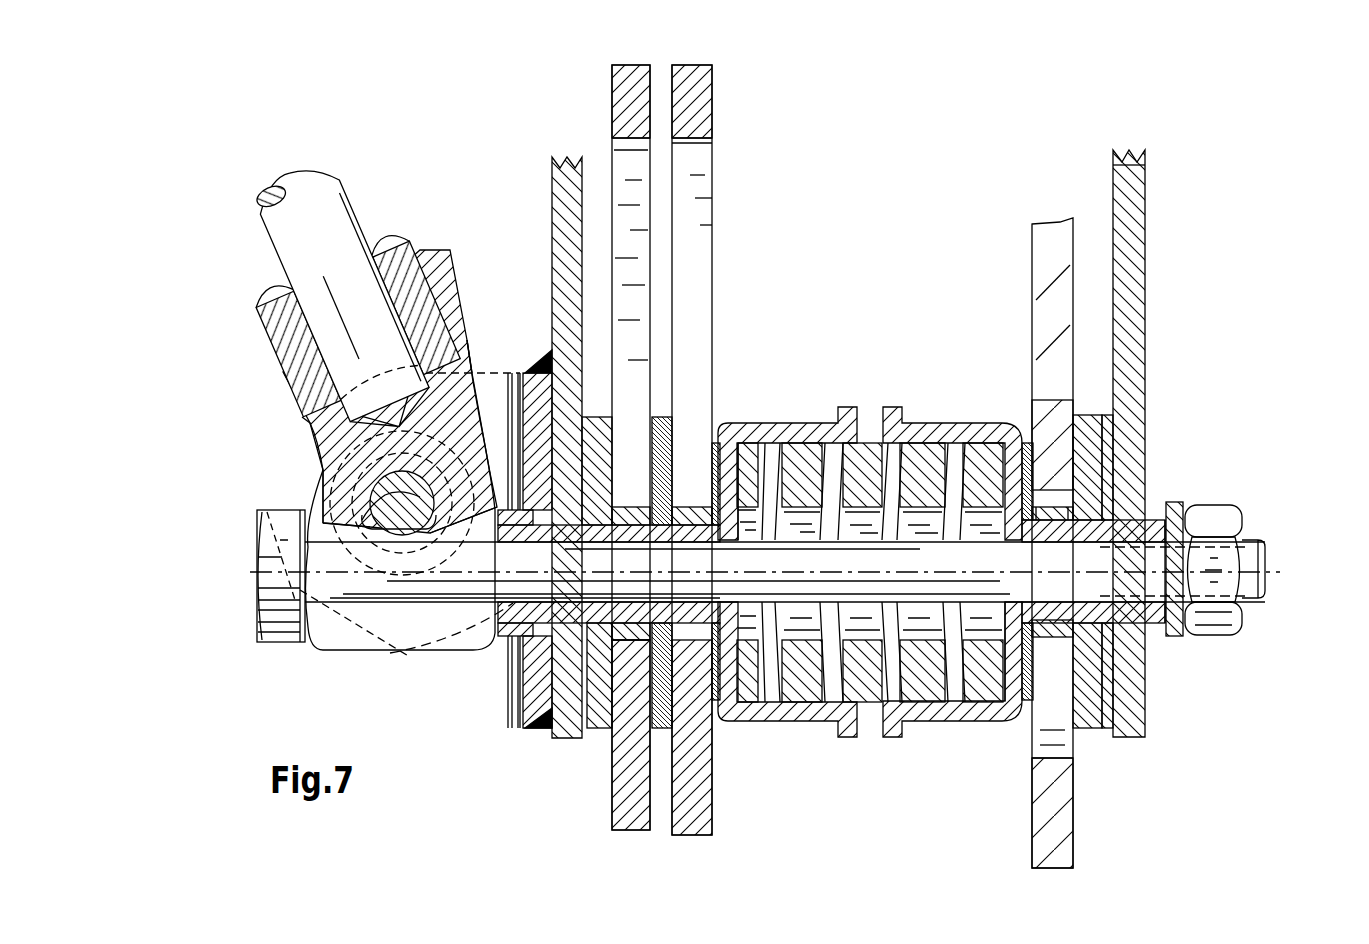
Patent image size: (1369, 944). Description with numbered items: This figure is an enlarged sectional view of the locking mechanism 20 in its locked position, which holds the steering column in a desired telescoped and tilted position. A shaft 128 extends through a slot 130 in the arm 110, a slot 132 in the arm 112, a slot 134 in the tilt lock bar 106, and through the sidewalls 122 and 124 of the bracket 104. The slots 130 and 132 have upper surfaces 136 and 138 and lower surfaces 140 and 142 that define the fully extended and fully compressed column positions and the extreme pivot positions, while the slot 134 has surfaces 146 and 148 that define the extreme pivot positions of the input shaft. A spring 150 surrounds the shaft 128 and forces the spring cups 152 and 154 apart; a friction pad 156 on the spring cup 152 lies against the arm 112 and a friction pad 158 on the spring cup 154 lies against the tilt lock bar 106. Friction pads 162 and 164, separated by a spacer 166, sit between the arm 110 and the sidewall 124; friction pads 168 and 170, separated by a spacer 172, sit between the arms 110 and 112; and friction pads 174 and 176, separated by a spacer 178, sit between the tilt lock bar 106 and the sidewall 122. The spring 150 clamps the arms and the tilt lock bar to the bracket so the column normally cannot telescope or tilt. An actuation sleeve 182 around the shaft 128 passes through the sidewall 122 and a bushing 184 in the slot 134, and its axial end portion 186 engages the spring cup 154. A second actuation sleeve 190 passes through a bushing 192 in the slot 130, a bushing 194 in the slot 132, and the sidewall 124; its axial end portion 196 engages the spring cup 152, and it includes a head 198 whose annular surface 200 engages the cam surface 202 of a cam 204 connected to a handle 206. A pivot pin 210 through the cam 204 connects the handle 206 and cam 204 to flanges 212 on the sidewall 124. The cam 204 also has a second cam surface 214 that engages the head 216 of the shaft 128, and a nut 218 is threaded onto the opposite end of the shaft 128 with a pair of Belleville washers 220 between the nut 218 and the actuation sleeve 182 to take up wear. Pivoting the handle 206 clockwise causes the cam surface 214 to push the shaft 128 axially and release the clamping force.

The locking mechanism 20 is at (1268, 322).
The bracket 104 is at (1125, 295).
The tilt lock bar 106 is at (1045, 245).
The arm 110 is at (640, 80).
The arm 112 is at (690, 75).
The sidewall 122 is at (1130, 165).
The sidewall 124 is at (565, 190).
The shaft 128 is at (1140, 572).
The slot 130 is at (632, 185).
The slot 132 is at (690, 200).
The slot 134 is at (1045, 740).
The upper surface 136 is at (620, 143).
The upper surface 138 is at (700, 148).
The lower surface 140 is at (600, 640).
The lower surface 142 is at (718, 660).
The surface 146 is at (1030, 480).
The surface 148 is at (1063, 745).
The spring 150 is at (865, 455).
The spring cup 152 is at (790, 435).
The spring cup 154 is at (970, 430).
The friction pad 156 is at (640, 515).
The friction pad 158 is at (1027, 700).
The friction pad 162 is at (600, 700).
The friction pad 164 is at (660, 725).
The spacer 166 is at (610, 730).
The friction pad 168 is at (600, 440).
The friction pad 170 is at (698, 510).
The spacer 172 is at (665, 420).
The friction pad 174 is at (1077, 492).
The friction pad 176 is at (1090, 420).
The spacer 178 is at (1105, 415).
The actuation sleeve 182 is at (1160, 625).
The bushing 184 is at (1068, 735).
The axial end portion 186 is at (1020, 613).
The actuation sleeve 190 is at (540, 690).
The bushing 192 is at (535, 430).
The bushing 194 is at (716, 480).
The axial end portion 196 is at (740, 640).
The head 198 is at (505, 688).
The annular surface 200 is at (497, 640).
The cam surface 202 is at (420, 648).
The cam 204 is at (317, 430).
The handle 206 is at (305, 237).
The pivot pin 210 is at (398, 500).
The flanges 212 is at (485, 385).
The second cam surface 214 is at (303, 600).
The head 216 is at (262, 552).
The nut 218 is at (1230, 523).
The Belleville washers 220 is at (1175, 505).